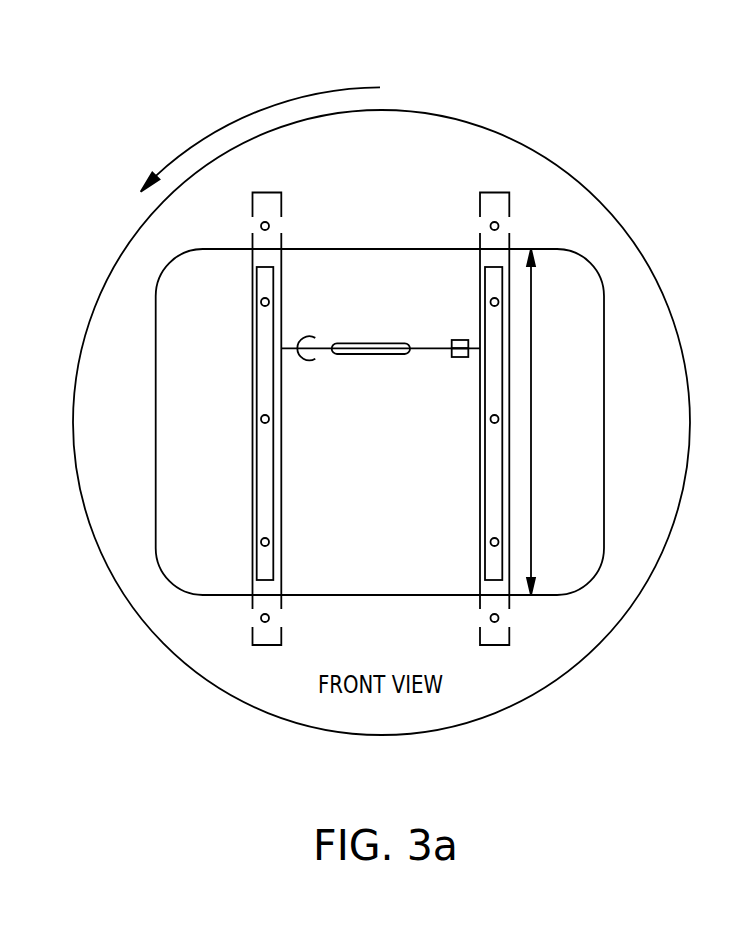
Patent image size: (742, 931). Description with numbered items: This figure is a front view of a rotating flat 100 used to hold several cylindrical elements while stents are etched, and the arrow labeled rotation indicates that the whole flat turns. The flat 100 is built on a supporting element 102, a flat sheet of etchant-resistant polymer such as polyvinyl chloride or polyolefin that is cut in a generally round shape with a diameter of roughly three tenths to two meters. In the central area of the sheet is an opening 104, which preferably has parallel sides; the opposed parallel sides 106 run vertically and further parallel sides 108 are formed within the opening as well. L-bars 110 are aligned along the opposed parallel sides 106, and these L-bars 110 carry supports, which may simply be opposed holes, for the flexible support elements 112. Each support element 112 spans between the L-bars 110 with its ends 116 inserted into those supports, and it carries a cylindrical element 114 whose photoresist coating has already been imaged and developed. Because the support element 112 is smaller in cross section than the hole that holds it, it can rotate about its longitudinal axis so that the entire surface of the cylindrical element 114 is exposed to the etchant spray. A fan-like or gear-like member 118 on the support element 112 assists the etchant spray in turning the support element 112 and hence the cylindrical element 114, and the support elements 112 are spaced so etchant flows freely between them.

The flat 100 is at (567, 173).
The supporting element 102 is at (513, 163).
The opening 104 is at (582, 302).
The parallel sides 106 is at (536, 422).
The parallel sides 108 is at (157, 473).
The L-bars 110 is at (282, 512).
The support element 112 is at (426, 347).
The cylindrical element 114 is at (372, 343).
The ends 116 is at (283, 342).
The fan-like or gear-like member 118 is at (460, 358).